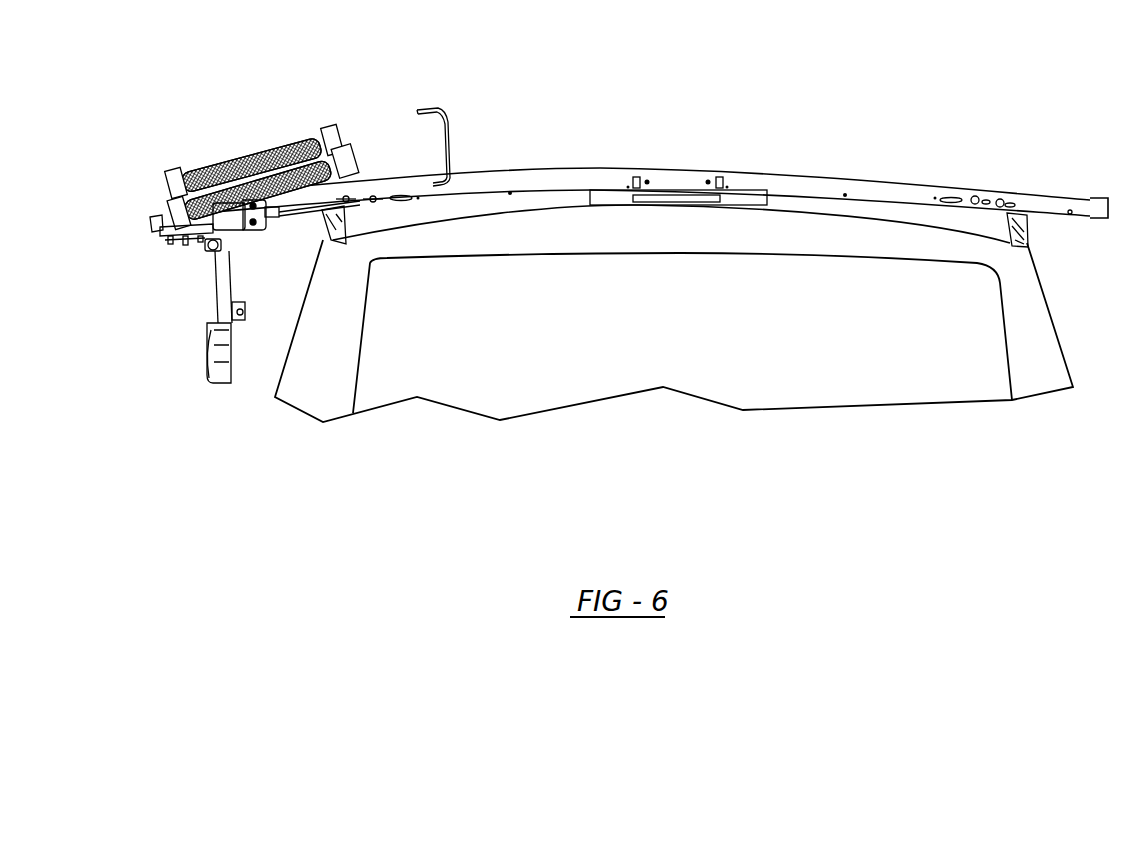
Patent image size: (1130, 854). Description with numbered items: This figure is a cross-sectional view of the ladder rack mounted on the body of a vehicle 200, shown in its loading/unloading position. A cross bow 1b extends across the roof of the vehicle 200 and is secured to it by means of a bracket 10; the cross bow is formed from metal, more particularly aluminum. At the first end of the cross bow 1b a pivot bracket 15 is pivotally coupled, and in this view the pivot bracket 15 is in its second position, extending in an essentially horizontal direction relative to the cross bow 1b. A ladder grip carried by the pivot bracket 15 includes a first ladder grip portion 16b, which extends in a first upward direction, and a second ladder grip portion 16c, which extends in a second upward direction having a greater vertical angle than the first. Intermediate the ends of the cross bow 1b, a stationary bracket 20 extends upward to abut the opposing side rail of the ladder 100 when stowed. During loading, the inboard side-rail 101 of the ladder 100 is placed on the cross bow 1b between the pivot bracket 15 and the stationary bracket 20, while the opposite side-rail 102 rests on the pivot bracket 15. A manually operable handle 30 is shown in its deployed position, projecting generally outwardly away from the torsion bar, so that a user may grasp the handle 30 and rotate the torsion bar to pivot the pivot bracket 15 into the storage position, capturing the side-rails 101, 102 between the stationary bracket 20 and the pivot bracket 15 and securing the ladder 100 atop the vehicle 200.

The bracket 10 is at (1028, 233).
The cross bow 1b is at (772, 173).
The vehicle 200 is at (900, 217).
The stationary bracket 20 is at (450, 146).
The ladder 100 is at (245, 137).
The inboard side-rail 101 is at (362, 158).
The opposite side-rail 102 is at (157, 223).
The first ladder grip portion 16b is at (160, 227).
The second ladder grip portion 16c is at (150, 222).
The pivot bracket 15 is at (183, 244).
The handle 30 is at (207, 347).